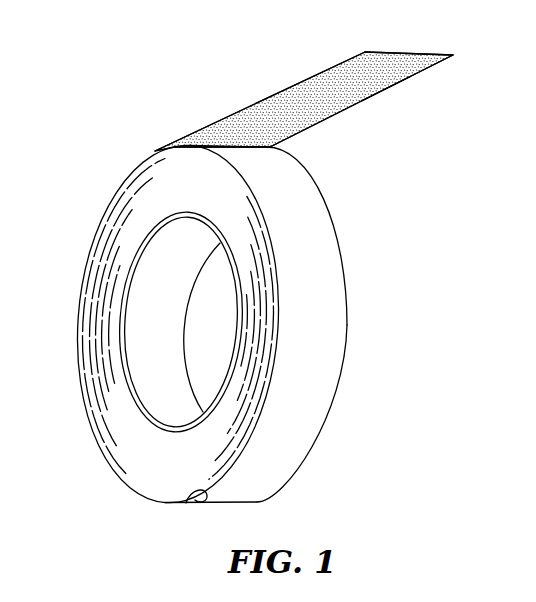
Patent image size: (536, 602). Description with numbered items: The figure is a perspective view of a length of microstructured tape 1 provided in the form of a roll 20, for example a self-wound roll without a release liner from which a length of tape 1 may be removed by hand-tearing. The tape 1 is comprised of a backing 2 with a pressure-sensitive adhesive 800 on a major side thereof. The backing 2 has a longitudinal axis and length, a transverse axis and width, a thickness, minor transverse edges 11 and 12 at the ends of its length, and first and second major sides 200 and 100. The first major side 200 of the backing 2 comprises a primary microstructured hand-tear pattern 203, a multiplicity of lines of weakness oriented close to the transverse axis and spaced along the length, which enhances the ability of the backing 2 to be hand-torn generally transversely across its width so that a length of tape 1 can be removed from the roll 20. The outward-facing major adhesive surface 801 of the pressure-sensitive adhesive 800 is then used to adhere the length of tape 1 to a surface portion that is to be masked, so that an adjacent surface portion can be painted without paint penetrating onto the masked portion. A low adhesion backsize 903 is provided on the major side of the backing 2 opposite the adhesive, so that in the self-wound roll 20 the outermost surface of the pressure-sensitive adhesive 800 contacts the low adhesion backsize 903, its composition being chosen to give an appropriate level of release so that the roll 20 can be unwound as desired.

The roll 20 is at (120, 113).
The second major side 100 is at (325, 301).
The microstructured tape 1 is at (263, 102).
The backing 2 is at (323, 73).
The pressure-sensitive adhesive 800 is at (288, 125).
The first major side 200 is at (346, 105).
The primary microstructured hand-tear pattern 203 is at (385, 85).
The outward-facing major adhesive surface 801 is at (408, 68).
The low adhesion backsize 903 is at (325, 413).
The minor transverse edge 12 is at (305, 462).
The minor transverse edge 11 is at (192, 502).